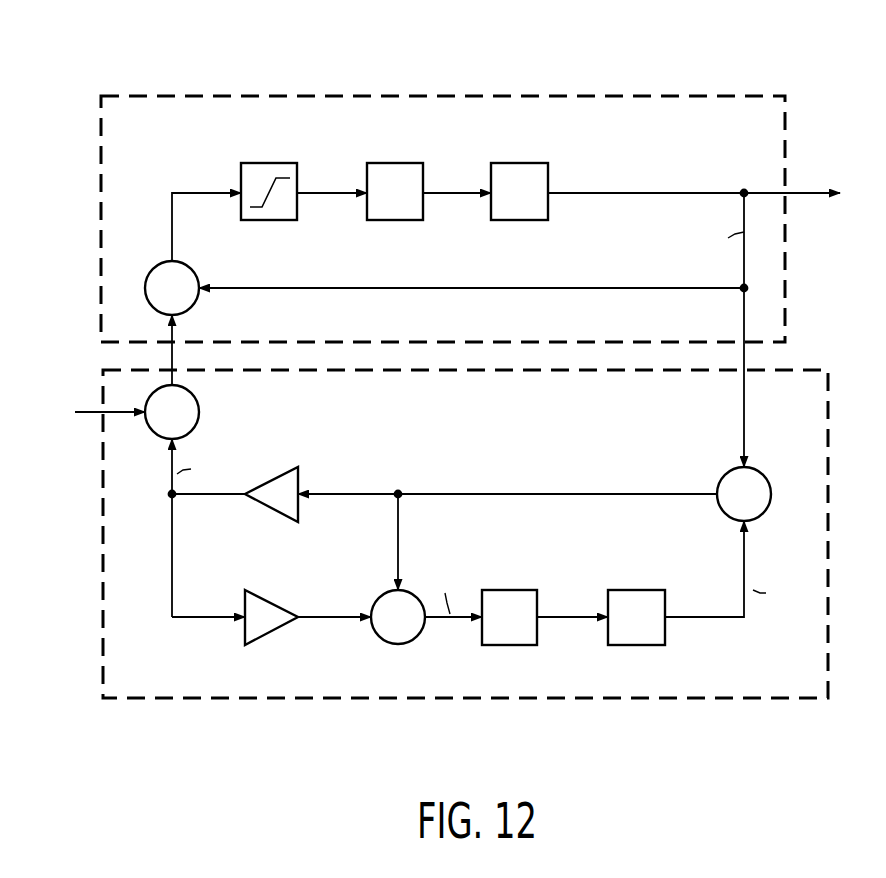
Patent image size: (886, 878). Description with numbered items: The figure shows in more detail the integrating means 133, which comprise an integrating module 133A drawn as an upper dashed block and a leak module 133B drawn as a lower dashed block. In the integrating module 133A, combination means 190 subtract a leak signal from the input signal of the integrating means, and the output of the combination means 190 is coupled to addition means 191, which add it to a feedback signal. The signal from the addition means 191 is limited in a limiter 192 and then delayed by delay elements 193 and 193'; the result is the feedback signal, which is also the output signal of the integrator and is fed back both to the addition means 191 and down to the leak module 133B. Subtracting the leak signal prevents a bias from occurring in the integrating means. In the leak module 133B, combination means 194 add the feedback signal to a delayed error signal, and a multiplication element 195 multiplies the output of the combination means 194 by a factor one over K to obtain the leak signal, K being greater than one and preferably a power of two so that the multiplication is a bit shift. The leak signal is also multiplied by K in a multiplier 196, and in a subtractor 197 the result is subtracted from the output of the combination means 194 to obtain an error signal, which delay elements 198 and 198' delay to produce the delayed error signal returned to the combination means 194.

The integrating means 133 is at (208, 733).
The integrating module 133A is at (677, 93).
The leak module 133B is at (708, 703).
The combination means 190 is at (193, 402).
The addition means 191 is at (190, 268).
The limiter 192 is at (255, 163).
The delay element 193 is at (395, 170).
The delay element 193' is at (519, 170).
The combination means 194 is at (722, 478).
The multiplication element 195 is at (291, 467).
The multiplier 196 is at (273, 598).
The subtractor 197 is at (398, 645).
The delay element 198 is at (509, 592).
The delay element 198' is at (636, 592).